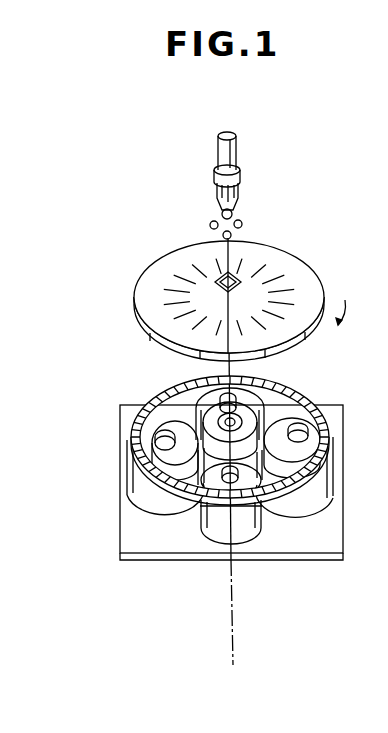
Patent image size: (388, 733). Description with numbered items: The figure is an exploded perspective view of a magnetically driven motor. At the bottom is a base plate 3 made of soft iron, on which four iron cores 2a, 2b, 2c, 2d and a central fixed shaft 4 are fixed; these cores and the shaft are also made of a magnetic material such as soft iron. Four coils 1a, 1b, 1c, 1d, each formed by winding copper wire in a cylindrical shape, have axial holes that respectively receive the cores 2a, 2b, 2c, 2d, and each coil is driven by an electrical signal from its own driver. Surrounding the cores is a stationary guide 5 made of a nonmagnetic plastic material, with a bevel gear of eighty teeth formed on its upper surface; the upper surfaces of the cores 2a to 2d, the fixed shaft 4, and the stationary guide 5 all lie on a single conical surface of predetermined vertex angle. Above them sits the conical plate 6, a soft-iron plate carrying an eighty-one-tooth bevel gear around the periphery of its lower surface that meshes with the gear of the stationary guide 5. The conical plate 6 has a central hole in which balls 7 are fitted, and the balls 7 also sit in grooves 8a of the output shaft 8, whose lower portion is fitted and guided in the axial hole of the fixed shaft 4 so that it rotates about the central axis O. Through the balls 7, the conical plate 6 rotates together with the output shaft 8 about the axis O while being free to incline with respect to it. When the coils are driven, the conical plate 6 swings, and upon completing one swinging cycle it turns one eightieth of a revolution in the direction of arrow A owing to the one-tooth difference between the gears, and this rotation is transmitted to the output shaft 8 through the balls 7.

The coil 1a is at (337, 468).
The coil 1b is at (247, 528).
The coil 1c is at (140, 495).
The coil 1d is at (167, 393).
The iron core 2a is at (283, 423).
The iron core 2b is at (196, 507).
The iron core 2c is at (155, 440).
The iron core 2d is at (212, 384).
The base plate 3 is at (332, 537).
The fixed shaft 4 is at (300, 430).
The stationary guide 5 is at (282, 396).
The conical plate 6 is at (312, 286).
The balls 7 is at (243, 223).
The output shaft 8 is at (237, 161).
The grooves 8a is at (240, 195).
The arrow A is at (351, 312).
The central axis O is at (233, 463).